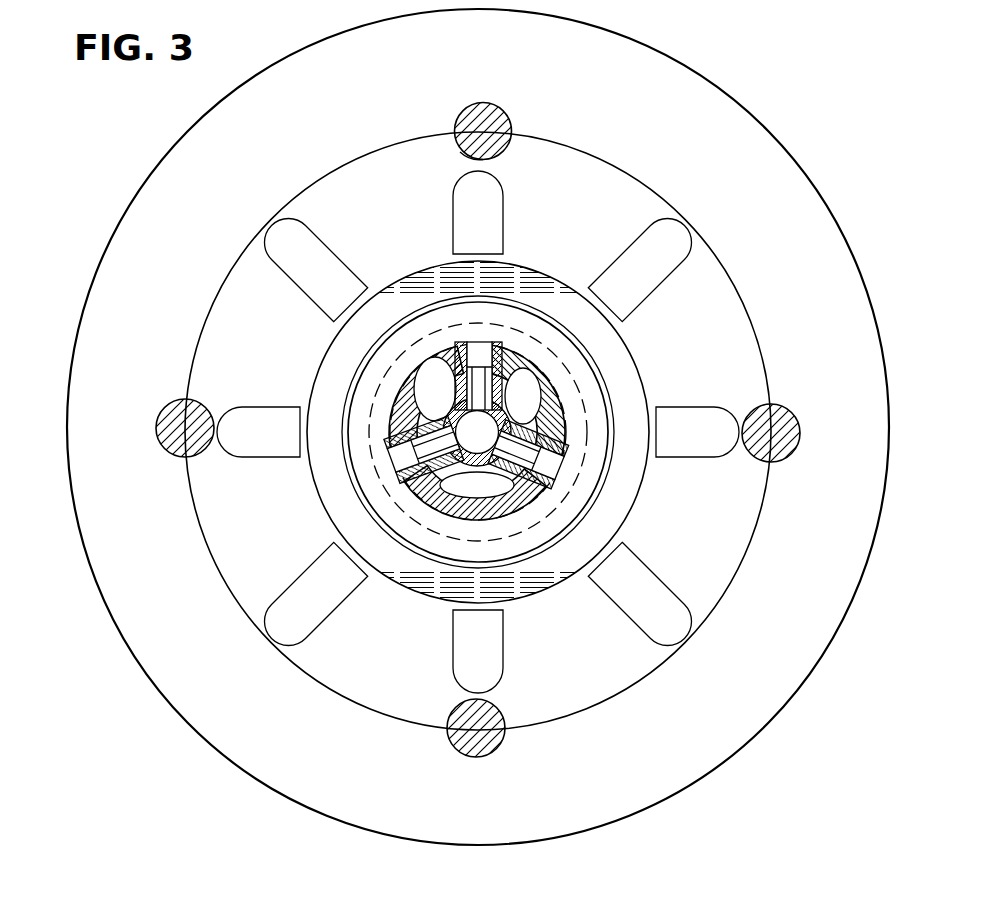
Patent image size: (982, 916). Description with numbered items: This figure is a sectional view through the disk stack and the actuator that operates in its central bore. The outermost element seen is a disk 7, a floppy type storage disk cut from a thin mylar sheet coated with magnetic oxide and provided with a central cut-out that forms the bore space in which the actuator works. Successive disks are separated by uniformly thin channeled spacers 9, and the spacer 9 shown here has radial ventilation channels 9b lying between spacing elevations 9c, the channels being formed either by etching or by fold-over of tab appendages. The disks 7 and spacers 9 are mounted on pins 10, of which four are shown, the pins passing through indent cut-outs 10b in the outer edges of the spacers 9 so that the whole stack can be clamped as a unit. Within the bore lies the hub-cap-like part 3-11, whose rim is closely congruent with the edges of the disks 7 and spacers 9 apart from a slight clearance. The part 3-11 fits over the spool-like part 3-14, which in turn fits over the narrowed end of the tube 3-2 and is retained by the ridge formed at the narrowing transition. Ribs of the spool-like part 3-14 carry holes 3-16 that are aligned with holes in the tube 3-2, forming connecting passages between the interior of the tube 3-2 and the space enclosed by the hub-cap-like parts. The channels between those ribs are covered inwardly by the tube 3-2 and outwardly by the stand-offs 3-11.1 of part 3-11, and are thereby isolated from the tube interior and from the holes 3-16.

The disk 7 is at (693, 92).
The channeled spacer 9 is at (578, 173).
The radial ventilation channel 9b is at (665, 325).
The spacing elevation 9c is at (463, 198).
The pin 10 is at (488, 125).
The indent cut-out 10b is at (458, 151).
The tube 3-2 is at (448, 417).
The hub-cap-like part 3-11 is at (625, 377).
The stand-off 3-11.1 is at (500, 434).
The spool-like part 3-14 is at (533, 337).
The hole 3-16 is at (518, 454).